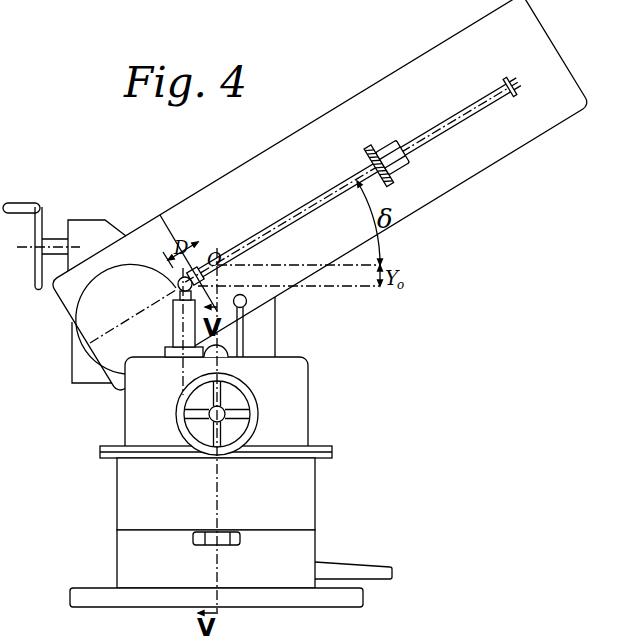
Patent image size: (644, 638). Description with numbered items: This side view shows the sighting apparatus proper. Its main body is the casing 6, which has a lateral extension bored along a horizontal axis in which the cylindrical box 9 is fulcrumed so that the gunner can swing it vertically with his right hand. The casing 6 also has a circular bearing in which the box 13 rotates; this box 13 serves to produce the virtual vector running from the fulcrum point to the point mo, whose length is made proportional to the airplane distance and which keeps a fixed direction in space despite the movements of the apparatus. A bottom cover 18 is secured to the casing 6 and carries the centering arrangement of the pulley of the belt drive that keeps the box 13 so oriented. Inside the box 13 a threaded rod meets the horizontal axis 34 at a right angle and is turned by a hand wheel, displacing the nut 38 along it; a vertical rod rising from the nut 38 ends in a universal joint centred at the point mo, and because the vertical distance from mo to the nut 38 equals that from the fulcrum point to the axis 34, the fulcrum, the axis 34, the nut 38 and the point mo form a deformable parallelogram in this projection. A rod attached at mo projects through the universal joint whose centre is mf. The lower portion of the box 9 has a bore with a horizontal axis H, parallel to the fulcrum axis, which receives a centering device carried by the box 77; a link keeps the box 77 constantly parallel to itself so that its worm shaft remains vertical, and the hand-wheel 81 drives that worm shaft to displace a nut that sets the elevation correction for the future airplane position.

The cylindrical box 9 is at (66, 288).
The box 77 is at (75, 227).
The hand-wheel 81 is at (13, 206).
The horizontal axis of bore in box 9 H is at (138, 321).
The universal joint centre point mo is at (178, 287).
The universal joint centre mf is at (392, 150).
The box 13 is at (123, 447).
The casing 6 is at (133, 488).
The bottom cover 18 is at (133, 548).
The nut 38 is at (182, 438).
The horizontal axis 34 is at (223, 410).